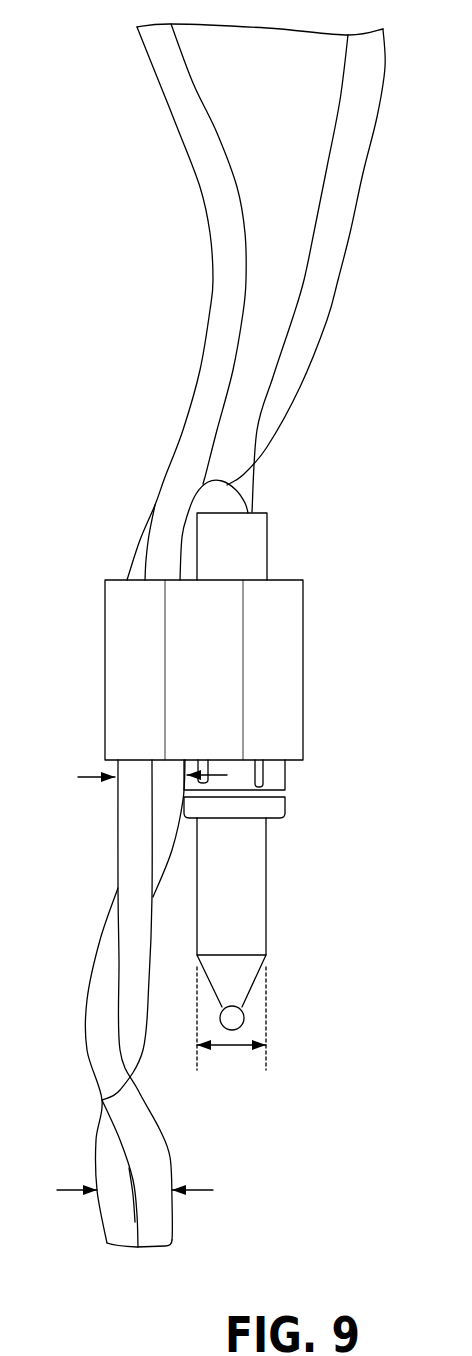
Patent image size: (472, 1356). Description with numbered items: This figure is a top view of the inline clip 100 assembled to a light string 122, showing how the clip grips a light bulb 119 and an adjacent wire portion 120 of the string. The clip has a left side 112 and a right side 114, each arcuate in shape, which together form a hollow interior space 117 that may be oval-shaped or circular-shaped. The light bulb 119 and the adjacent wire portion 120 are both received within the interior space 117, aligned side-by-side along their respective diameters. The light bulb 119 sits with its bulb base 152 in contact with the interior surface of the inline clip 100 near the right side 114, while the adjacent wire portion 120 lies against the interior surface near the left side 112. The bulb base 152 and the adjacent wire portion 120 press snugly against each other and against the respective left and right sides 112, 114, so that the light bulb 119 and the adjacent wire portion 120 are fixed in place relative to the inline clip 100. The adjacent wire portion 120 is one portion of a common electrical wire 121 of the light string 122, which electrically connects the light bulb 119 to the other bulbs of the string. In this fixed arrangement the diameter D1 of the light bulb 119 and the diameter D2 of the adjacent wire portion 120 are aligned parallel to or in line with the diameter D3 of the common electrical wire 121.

The inline clip 100 is at (273, 648).
The left side 112 is at (118, 648).
The right side 114 is at (280, 695).
The hollow interior space 117 is at (243, 560).
The light bulb 119 is at (228, 877).
The adjacent wire portion 120 is at (135, 813).
The common electrical wire 121 is at (120, 1080).
The light string 122 is at (182, 370).
The bulb base 152 is at (263, 767).
The diameter of the light bulb D1 is at (232, 1047).
The diameter of the adjacent wire portion D2 is at (100, 777).
The diameter of the common electrical wire D3 is at (70, 1193).